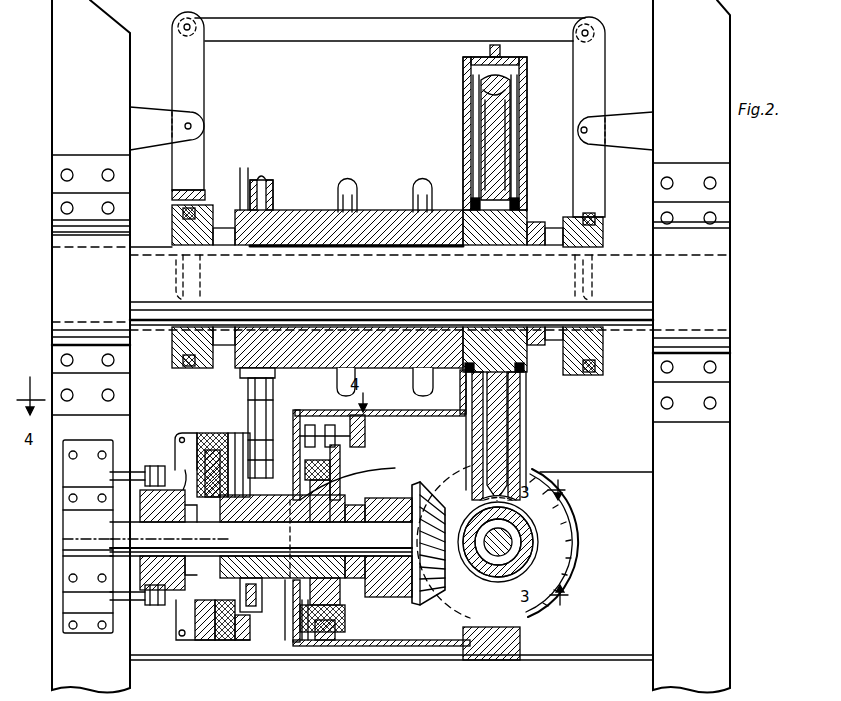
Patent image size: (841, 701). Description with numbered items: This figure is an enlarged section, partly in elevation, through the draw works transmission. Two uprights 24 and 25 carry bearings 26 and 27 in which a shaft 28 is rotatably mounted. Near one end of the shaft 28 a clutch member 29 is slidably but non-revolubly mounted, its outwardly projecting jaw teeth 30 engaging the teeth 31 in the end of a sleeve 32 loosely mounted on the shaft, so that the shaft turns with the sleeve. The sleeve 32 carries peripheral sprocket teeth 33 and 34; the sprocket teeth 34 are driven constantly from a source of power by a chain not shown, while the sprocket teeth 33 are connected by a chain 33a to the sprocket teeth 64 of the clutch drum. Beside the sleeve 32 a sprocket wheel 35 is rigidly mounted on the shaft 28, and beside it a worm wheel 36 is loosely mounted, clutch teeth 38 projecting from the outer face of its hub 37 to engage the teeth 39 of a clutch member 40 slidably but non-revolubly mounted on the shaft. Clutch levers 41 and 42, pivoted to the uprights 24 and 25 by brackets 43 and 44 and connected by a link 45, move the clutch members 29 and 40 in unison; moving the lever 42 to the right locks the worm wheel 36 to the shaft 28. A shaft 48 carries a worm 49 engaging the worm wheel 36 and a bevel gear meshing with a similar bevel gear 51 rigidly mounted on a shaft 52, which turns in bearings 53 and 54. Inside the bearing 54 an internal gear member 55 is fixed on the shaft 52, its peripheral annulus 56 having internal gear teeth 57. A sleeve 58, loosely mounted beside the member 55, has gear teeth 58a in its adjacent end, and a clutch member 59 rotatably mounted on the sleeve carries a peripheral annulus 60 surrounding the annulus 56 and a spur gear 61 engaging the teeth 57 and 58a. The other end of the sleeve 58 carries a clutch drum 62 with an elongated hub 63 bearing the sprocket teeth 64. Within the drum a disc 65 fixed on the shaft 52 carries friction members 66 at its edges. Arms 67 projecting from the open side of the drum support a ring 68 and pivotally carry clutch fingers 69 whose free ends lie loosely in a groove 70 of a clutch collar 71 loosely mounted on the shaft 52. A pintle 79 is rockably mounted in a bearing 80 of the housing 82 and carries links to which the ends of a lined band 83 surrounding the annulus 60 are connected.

The upright 24 is at (91, 346).
The upright 25 is at (708, 142).
The bearing 26 is at (55, 234).
The bearing 27 is at (722, 222).
The shaft 28 is at (530, 283).
The clutch member 29 is at (175, 228).
The jaw teeth 30 is at (222, 226).
The teeth 31 is at (241, 168).
The sleeve 32 is at (300, 212).
The sprocket teeth 33 is at (266, 178).
The chain 33a is at (248, 398).
The sprocket teeth 34 is at (347, 185).
The sprocket wheel 35 is at (427, 185).
The worm wheel 36 is at (492, 112).
The hub 37 is at (515, 192).
The clutch teeth 38 is at (532, 220).
The teeth 39 is at (555, 226).
The clutch member 40 is at (590, 224).
The clutch lever 41 is at (196, 68).
The clutch lever 42 is at (588, 72).
The bracket 43 is at (160, 112).
The bracket 44 is at (636, 140).
The link 45 is at (338, 38).
The shaft 48 is at (505, 536).
The worm 49 is at (520, 540).
The bevel gear 51 is at (440, 585).
The shaft 52 is at (308, 535).
The bearing 53 is at (72, 514).
The bearing 54 is at (388, 600).
The internal gear member 55 is at (447, 468).
The peripheral annulus 56 is at (340, 632).
The internal gear teeth 57 is at (338, 600).
The sleeve 58 is at (280, 646).
The gear teeth 58a is at (352, 474).
The clutch member 59 is at (305, 642).
The peripheral annulus 60 is at (330, 642).
The spur gear 61 is at (362, 465).
The clutch drum 62 is at (225, 642).
The elongated hub 63 is at (292, 646).
The sprocket teeth 64 is at (255, 612).
The disc 65 is at (205, 640).
The friction members 66 is at (182, 640).
The arms 67 is at (200, 432).
The ring 68 is at (238, 432).
The clutch fingers 69 is at (176, 452).
The groove 70 is at (172, 600).
The clutch collar 71 is at (152, 520).
The pintle 79 is at (330, 424).
The bearing 80 is at (362, 418).
The housing 82 is at (448, 660).
The band 83 is at (330, 480).